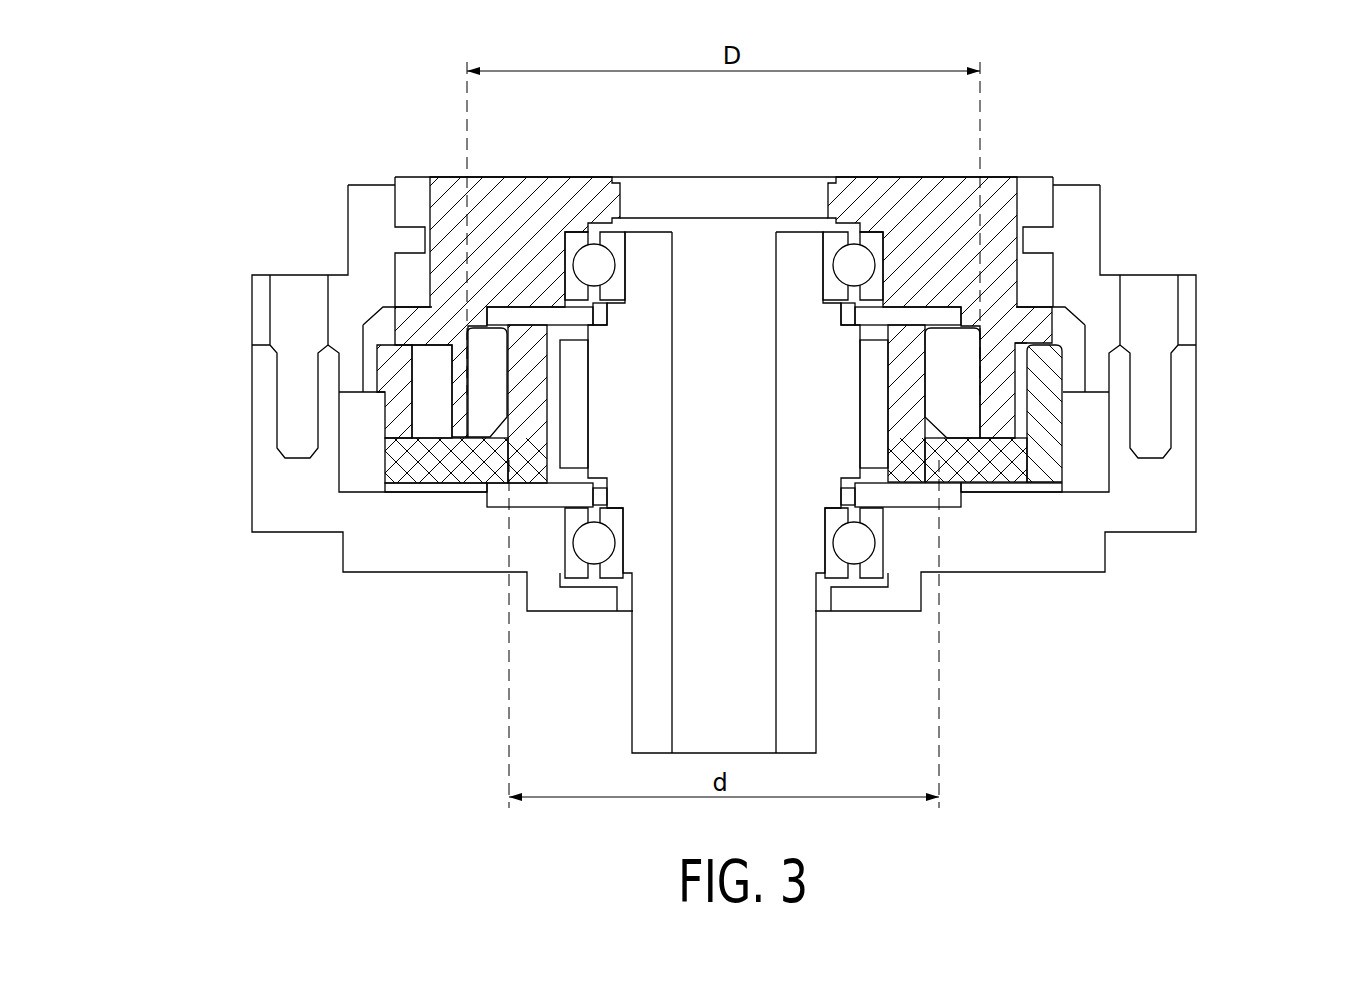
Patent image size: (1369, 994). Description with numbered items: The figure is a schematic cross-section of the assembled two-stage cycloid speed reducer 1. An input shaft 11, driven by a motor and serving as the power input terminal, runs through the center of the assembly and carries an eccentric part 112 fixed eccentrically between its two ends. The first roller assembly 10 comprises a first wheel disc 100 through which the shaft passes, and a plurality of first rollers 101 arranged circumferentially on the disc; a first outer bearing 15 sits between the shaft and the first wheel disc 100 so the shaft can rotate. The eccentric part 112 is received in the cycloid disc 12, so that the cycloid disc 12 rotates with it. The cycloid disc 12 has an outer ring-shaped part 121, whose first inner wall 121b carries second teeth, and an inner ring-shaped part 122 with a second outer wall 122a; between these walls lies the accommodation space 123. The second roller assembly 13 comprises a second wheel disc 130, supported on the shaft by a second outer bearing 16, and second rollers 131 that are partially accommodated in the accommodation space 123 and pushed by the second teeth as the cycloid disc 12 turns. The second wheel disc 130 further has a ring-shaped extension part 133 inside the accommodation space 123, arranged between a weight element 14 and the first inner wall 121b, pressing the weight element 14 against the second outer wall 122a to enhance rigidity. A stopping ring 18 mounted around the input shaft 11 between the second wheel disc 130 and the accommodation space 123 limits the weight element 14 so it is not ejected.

The cycloid speed reducer 1 is at (1254, 152).
The first roller assembly 10 is at (388, 560).
The first wheel disc 100 is at (262, 410).
The first rollers 101 is at (352, 420).
The input shaft 11 is at (817, 722).
The eccentric part 112 is at (570, 452).
The cycloid disc 12 is at (458, 468).
The outer ring-shaped part 121 is at (430, 410).
The first inner wall 121b is at (1010, 405).
The inner ring-shaped part 122 is at (510, 403).
The second outer wall 122a is at (1045, 415).
The accommodation space 123 is at (1023, 368).
The second roller assembly 13 is at (1018, 177).
The second wheel disc 130 is at (857, 203).
The second rollers 131 is at (397, 418).
The ring-shaped extension part 133 is at (997, 367).
The weight element 14 is at (497, 372).
The first outer bearing 15 is at (612, 567).
The second outer bearing 16 is at (573, 243).
The stopping ring 18 is at (535, 320).